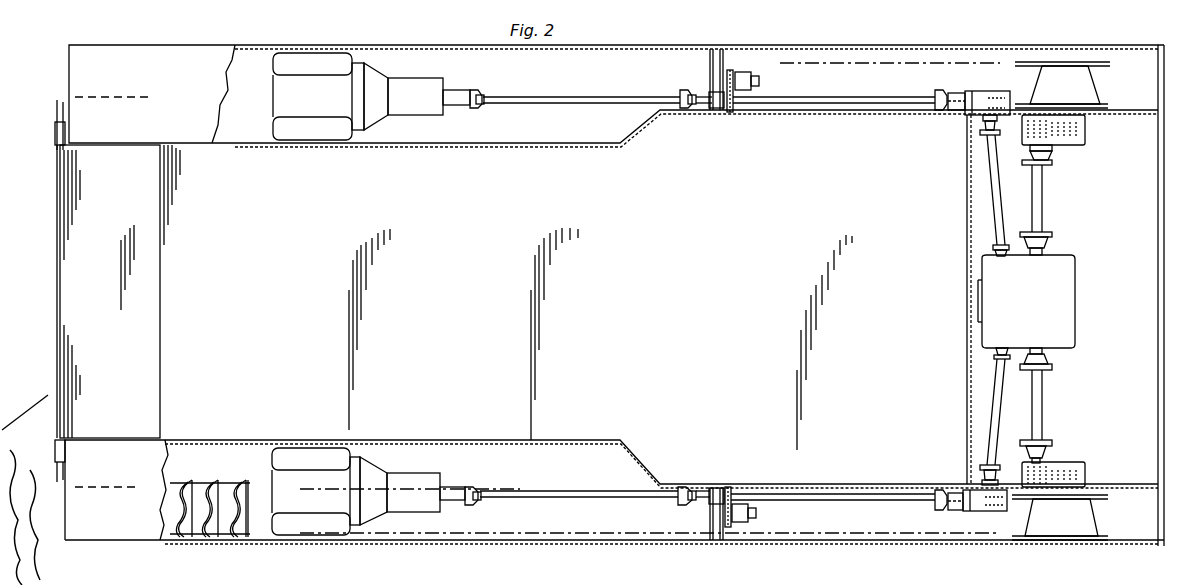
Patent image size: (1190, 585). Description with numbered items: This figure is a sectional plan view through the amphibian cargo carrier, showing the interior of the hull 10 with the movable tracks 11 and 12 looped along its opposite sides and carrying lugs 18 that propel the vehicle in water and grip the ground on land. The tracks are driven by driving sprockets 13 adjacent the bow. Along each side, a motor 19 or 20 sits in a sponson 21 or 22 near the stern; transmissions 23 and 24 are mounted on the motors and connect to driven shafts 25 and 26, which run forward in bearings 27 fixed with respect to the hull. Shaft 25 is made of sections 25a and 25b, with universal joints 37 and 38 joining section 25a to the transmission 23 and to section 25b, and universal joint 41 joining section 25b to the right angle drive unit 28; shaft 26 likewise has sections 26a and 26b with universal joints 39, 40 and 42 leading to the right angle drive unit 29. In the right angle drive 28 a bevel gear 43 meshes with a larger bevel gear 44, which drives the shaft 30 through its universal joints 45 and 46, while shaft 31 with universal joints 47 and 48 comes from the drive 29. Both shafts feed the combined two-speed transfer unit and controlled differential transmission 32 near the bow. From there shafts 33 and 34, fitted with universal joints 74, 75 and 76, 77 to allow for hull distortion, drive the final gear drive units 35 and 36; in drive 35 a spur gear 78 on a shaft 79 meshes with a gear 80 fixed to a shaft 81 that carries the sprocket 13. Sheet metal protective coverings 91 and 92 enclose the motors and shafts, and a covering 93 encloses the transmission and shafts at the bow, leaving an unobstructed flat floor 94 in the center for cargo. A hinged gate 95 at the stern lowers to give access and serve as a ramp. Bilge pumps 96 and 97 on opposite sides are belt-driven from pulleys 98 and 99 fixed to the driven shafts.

The hull 10 is at (1158, 248).
The track 11 is at (218, 478).
The track 12 is at (873, 62).
The driving sprocket 13 is at (1098, 62).
The lug 18 is at (220, 526).
The motor 19 is at (318, 534).
The motor 20 is at (320, 65).
The sponson 21 is at (472, 535).
The sponson 22 is at (436, 58).
The transmission 23 is at (410, 478).
The transmission 24 is at (418, 117).
The driven shaft 25 is at (560, 488).
The shaft section 25a is at (605, 498).
The shaft section 25b is at (856, 494).
The driven shaft 26 is at (568, 118).
The shaft section 26a is at (588, 96).
The shaft section 26b is at (832, 104).
The bearing 27 is at (715, 110).
The right angle drive unit 28 is at (968, 512).
The right angle drive unit 29 is at (985, 90).
The shaft 30 is at (990, 402).
The shaft 31 is at (992, 184).
The combined two-speed transfer unit and controlled differential transmission 32 is at (1078, 291).
The shaft 33 is at (1042, 393).
The shaft 34 is at (1042, 187).
The final gear drive unit 35 is at (1080, 464).
The final gear drive unit 36 is at (1085, 140).
The universal joint 37 is at (478, 502).
The universal joint 38 is at (684, 505).
The universal joint 39 is at (480, 92).
The universal joint 40 is at (688, 93).
The universal joint 41 is at (935, 508).
The universal joint 42 is at (938, 90).
The bevel gear 43 is at (978, 510).
The bevel gear 44 is at (985, 496).
The universal joint 45 is at (978, 470).
The universal joint 46 is at (993, 356).
The universal joint 47 is at (980, 133).
The universal joint 48 is at (992, 250).
The universal joint 74 is at (1052, 365).
The universal joint 75 is at (1046, 446).
The universal joint 76 is at (1050, 234).
The universal joint 77 is at (1052, 163).
The spur gear 78 is at (1058, 470).
The shaft 79 is at (1030, 466).
The gear 80 is at (1086, 478).
The shaft 81 is at (1062, 488).
The sheet metal protective covering 91 is at (480, 441).
The sheet metal protective covering 92 is at (480, 150).
The sheet metal covering 93 is at (966, 290).
The floor 94 is at (342, 260).
The gate 95 is at (57, 210).
The bilge pump 96 is at (738, 522).
The bilge pump 97 is at (742, 72).
The pulley 98 is at (735, 487).
The pulley 99 is at (735, 108).